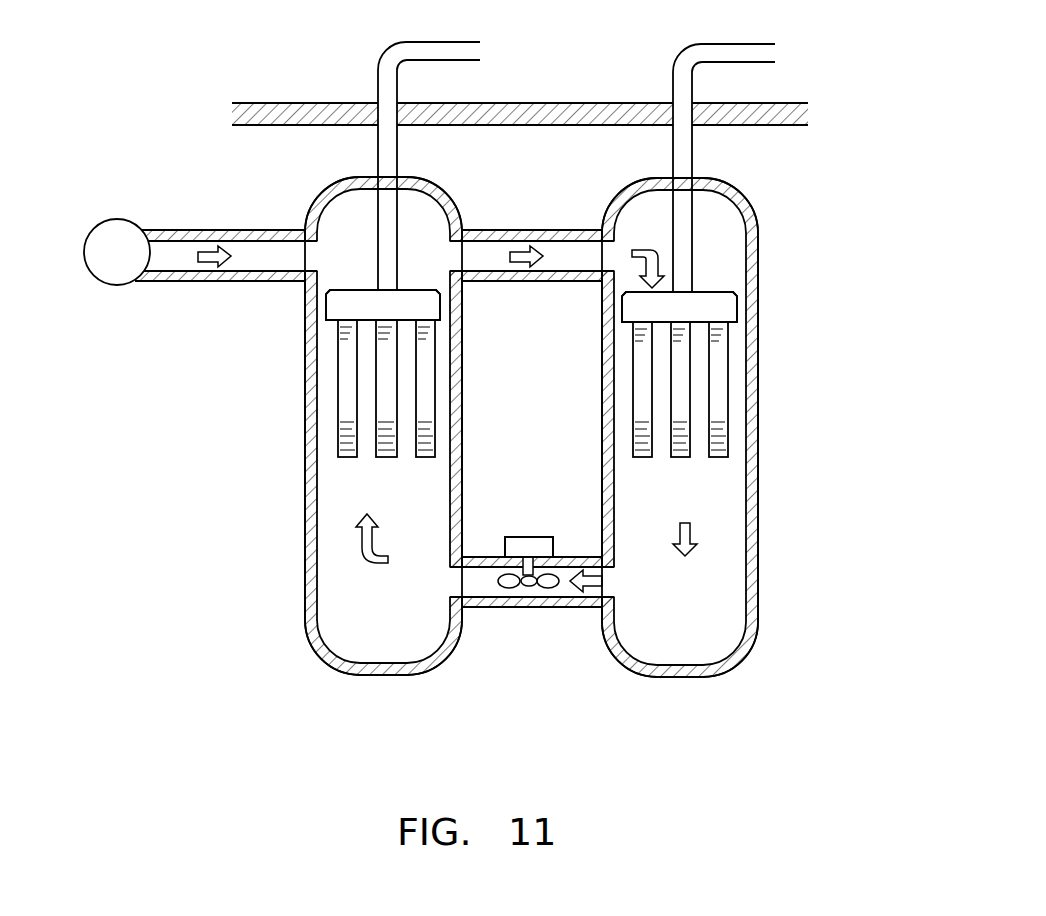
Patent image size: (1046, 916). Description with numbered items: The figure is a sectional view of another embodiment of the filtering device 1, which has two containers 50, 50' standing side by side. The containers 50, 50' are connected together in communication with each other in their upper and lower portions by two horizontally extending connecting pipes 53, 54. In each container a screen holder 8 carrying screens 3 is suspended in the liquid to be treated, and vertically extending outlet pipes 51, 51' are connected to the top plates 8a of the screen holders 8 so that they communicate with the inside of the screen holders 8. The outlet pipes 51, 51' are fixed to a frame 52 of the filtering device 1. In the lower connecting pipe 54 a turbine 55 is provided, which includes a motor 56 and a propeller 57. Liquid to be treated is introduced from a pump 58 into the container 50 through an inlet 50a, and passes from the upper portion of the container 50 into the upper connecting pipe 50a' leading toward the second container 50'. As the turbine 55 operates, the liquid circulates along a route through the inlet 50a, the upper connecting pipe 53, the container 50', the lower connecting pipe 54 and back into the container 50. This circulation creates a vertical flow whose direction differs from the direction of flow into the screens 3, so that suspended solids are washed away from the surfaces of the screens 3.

The filtering device 1 is at (805, 190).
The screen 3 is at (343, 397).
The screen holder 8 is at (326, 306).
The top plate 8a is at (347, 289).
The container 50 is at (320, 426).
The container 50' is at (750, 427).
The inlet 50a is at (227, 228).
The connecting pipe 50a' is at (532, 229).
The outlet pipe 51 is at (352, 166).
The outlet pipe 51' is at (641, 168).
The frame 52 is at (532, 103).
The connecting pipe 53 is at (527, 283).
The connecting pipe 54 is at (495, 600).
The turbine 55 is at (506, 527).
The motor 56 is at (543, 545).
The fan blades 57 is at (547, 590).
The pump 58 is at (122, 220).